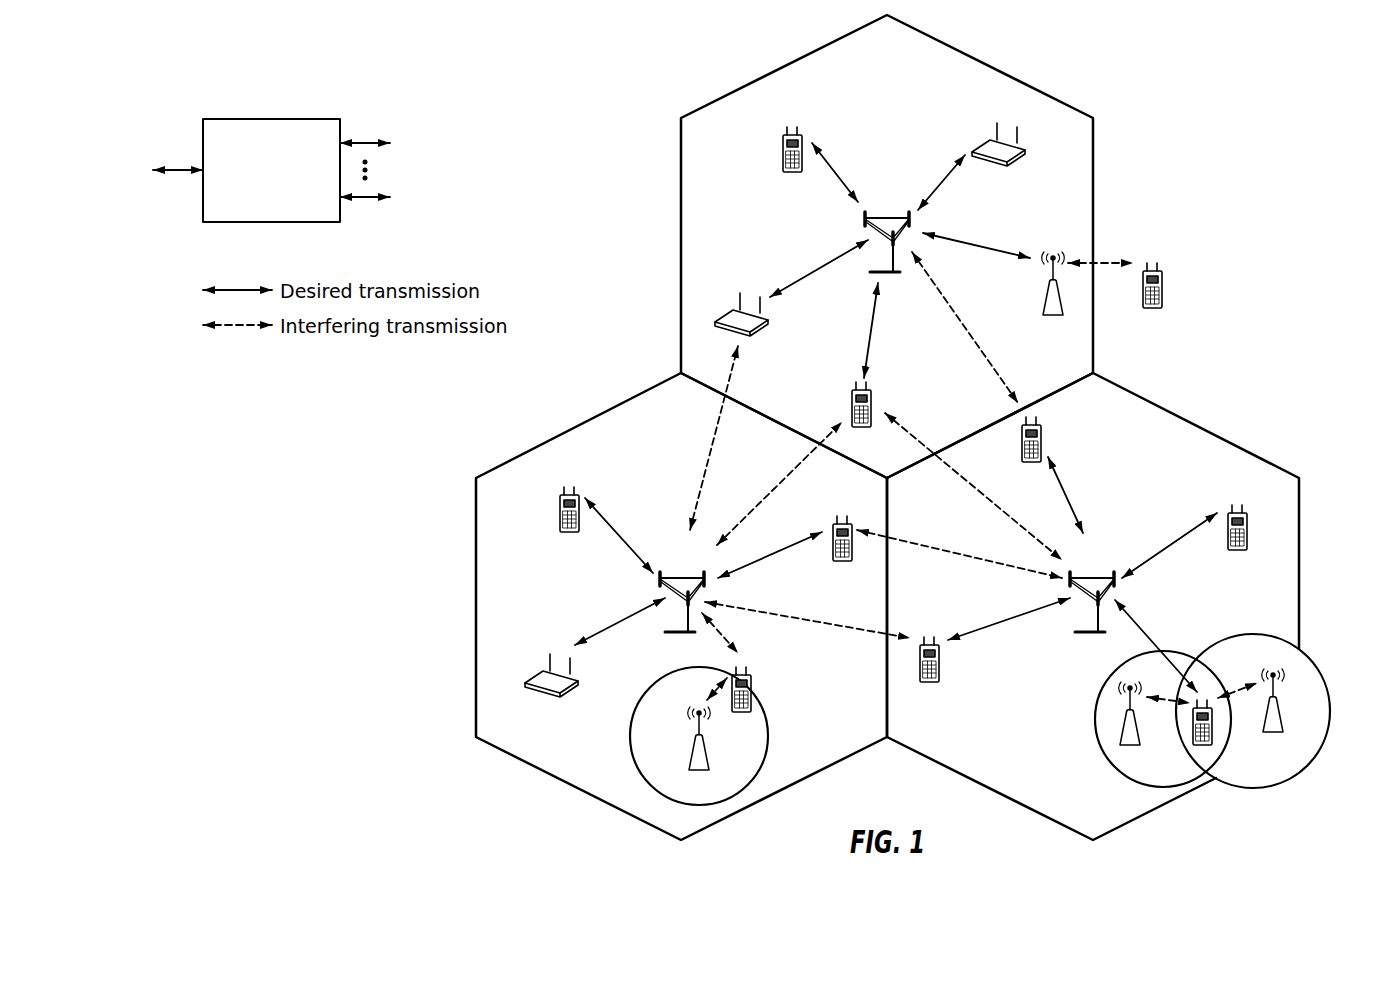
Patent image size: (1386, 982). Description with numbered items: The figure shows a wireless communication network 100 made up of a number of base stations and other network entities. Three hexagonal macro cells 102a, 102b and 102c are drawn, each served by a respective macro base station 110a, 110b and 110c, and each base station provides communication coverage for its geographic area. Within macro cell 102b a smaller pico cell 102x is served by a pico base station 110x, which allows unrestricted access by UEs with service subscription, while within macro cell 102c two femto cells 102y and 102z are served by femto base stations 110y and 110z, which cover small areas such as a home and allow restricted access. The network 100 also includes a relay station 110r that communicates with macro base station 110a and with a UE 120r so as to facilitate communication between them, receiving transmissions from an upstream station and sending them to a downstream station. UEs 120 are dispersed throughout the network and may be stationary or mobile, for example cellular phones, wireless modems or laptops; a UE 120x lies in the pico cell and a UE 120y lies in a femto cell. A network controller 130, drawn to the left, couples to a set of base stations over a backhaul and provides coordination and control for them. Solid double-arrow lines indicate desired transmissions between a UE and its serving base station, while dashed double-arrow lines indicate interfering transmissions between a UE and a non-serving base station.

The wireless communication network 100 is at (1233, 82).
The macro cell 102a is at (990, 68).
The macro cell 102b is at (580, 426).
The macro cell 102c is at (1196, 426).
The pico cell 102x is at (652, 686).
The femto cell 102y is at (1100, 694).
The femto cell 102z is at (1253, 634).
The macro base station 110a is at (887, 217).
The macro base station 110b is at (682, 577).
The macro base station 110c is at (1092, 577).
The relay station 110r is at (1045, 302).
The pico base station 110x is at (709, 766).
The femto base station 110y is at (1148, 752).
The femto base station 110z is at (1292, 740).
The UE 120 is at (784, 142).
The UE 120r is at (1160, 302).
The UE 120x is at (764, 674).
The UE 120y is at (1193, 742).
The network controller 130 is at (262, 119).